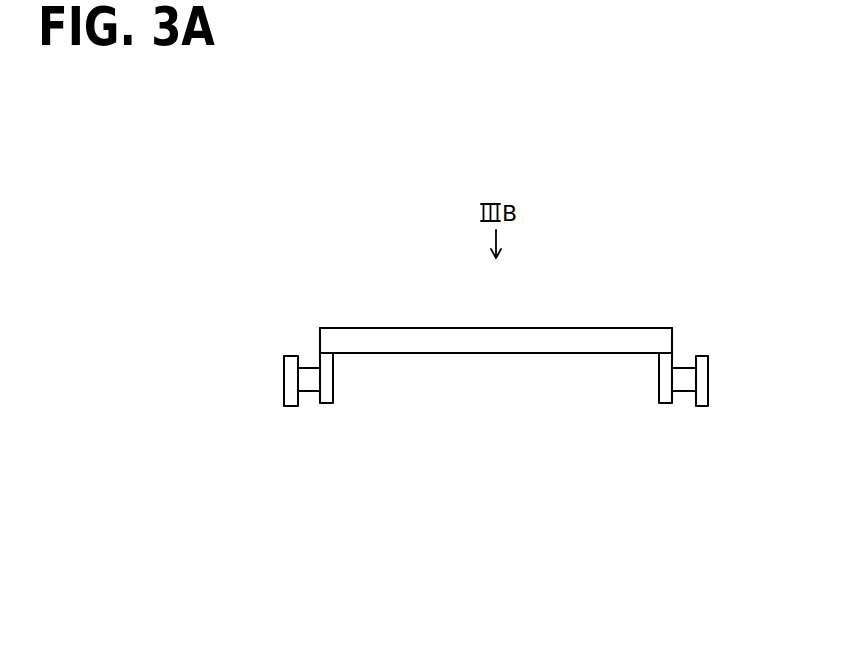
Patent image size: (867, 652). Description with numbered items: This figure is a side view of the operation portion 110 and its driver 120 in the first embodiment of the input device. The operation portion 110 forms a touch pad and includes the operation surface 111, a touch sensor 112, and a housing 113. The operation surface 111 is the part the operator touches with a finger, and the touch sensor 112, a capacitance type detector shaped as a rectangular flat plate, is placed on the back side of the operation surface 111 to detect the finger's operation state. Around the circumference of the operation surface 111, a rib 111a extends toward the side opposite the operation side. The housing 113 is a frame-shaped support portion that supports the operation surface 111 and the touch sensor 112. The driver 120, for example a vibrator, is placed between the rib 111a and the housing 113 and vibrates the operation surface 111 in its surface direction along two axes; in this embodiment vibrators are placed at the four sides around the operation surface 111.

The operation portion 110 is at (347, 325).
The operation surface 111 is at (392, 328).
The touch sensor 112 is at (450, 346).
The rib 111a is at (324, 354).
The housing 113 is at (284, 376).
The driver 120 is at (311, 388).